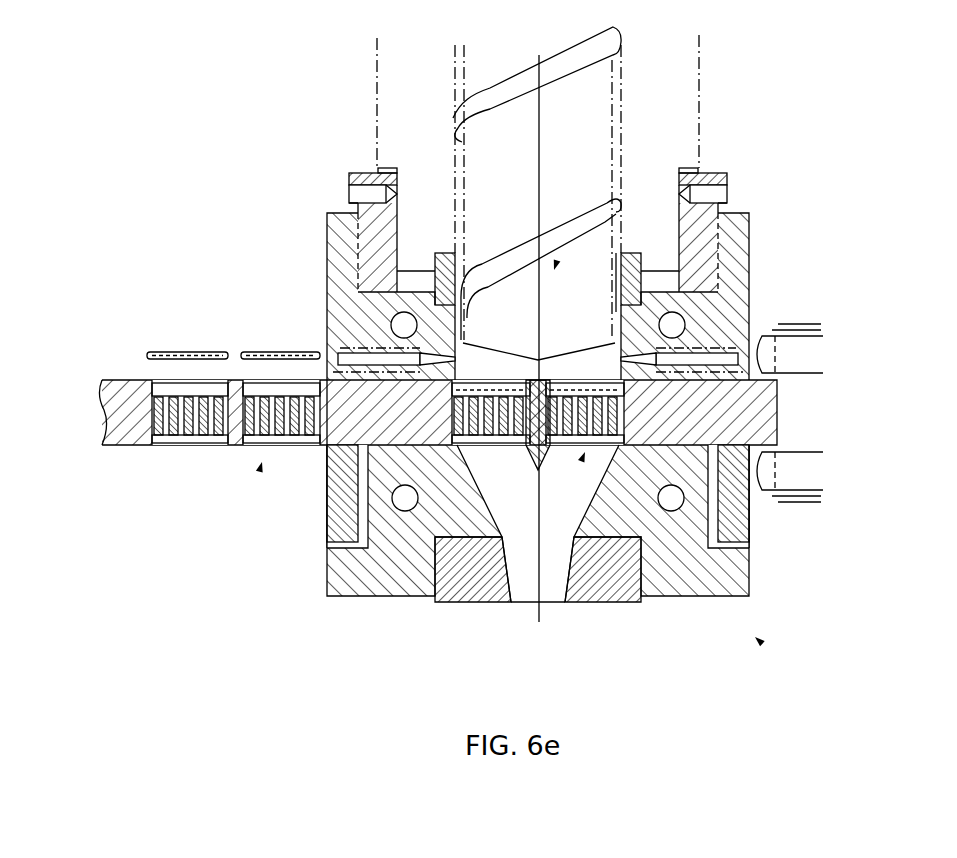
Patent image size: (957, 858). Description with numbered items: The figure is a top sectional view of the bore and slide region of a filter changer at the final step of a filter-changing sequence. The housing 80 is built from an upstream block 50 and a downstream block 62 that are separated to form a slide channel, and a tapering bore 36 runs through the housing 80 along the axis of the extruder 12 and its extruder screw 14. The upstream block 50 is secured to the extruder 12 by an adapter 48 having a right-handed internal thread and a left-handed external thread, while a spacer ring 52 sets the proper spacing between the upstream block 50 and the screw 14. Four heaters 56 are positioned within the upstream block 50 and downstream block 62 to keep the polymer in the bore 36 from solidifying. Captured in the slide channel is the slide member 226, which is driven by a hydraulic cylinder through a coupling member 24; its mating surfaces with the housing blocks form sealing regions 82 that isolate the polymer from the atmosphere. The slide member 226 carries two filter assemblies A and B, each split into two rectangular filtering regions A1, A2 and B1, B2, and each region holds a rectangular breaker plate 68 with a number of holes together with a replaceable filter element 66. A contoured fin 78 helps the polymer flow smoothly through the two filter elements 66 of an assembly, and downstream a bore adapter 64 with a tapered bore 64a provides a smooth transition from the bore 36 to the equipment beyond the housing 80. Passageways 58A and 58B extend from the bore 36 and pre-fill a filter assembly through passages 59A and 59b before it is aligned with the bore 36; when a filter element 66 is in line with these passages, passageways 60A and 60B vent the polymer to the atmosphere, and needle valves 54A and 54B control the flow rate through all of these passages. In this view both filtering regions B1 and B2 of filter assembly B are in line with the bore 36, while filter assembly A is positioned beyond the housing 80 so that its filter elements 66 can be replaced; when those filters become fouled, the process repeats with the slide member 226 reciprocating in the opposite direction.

The extruder 12 is at (699, 86).
The extruder screw 14 is at (583, 52).
The coupling member 24 is at (813, 355).
The tapering bore 36 is at (557, 262).
The adapter 48 is at (365, 173).
The upstream block 50 is at (327, 211).
The spacer ring 52 is at (445, 253).
The needle valve 54A is at (340, 352).
The needle valve 54B is at (752, 352).
The heater 56 is at (393, 316).
The passageway 58A is at (462, 343).
The passageway 58B is at (612, 333).
The passage 59A is at (433, 445).
The passage 59b is at (642, 445).
The passageway 60A is at (323, 543).
The passageway 60B is at (745, 541).
The downstream block 62 is at (735, 590).
The bore adapter 64 is at (607, 598).
The tapered bore 64a is at (528, 596).
The filter element 66 is at (250, 352).
The breaker plate 68 is at (258, 448).
The contoured fin 78 is at (534, 458).
The housing 80 is at (761, 643).
The sealing region 82 is at (325, 452).
The slide member 226 is at (125, 446).
The filter assembly A is at (260, 470).
The filter assembly B is at (582, 460).
The filtering region A1 is at (168, 391).
The filtering region A2 is at (156, 379).
The filtering region B1 is at (493, 387).
The filtering region B2 is at (580, 387).